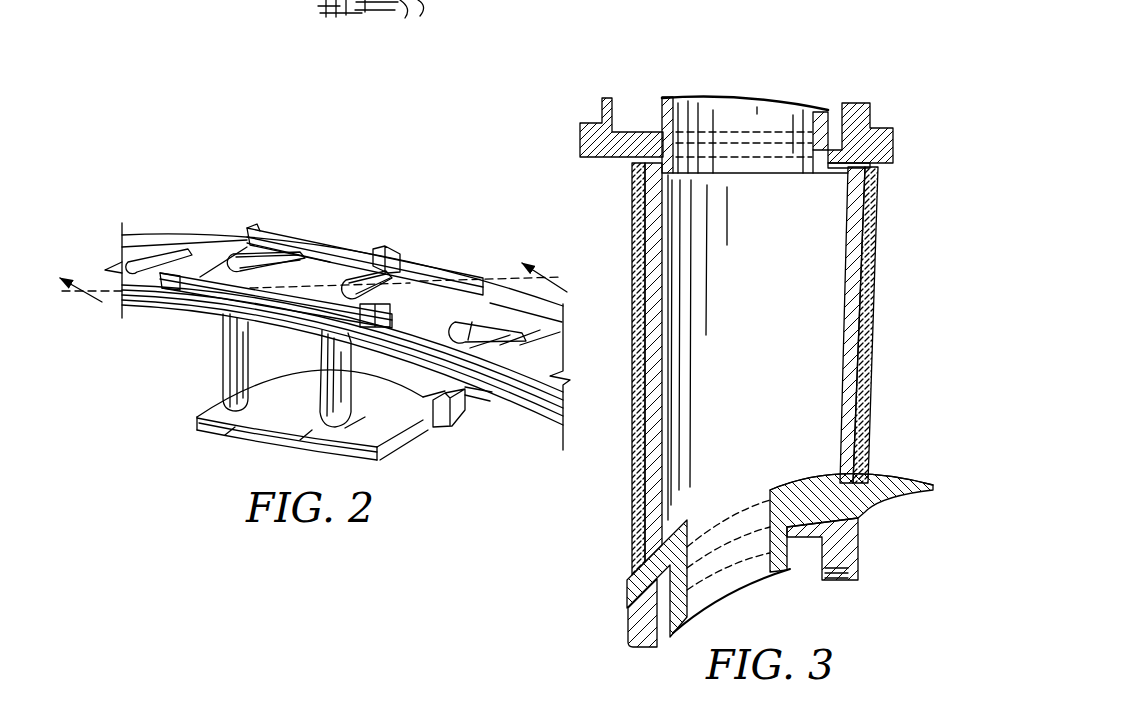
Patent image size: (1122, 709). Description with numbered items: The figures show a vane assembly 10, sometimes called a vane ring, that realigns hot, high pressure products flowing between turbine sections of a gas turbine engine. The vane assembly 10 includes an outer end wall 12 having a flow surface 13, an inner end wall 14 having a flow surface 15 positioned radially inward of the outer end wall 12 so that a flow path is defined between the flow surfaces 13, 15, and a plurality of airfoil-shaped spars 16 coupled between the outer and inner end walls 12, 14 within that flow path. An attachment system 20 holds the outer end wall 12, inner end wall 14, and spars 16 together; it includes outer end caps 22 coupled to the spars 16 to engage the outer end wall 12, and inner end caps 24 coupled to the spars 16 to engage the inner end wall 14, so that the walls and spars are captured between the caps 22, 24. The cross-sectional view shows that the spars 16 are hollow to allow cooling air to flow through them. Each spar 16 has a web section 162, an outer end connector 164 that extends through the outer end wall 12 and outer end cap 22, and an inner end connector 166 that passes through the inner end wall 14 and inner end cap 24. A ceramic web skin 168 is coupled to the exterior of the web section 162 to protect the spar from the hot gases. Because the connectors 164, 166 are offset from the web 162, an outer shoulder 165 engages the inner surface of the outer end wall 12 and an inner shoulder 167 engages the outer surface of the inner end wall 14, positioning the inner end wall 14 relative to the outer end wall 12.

In FIG. 2, the vane assembly 10 is at (123, 112).
In FIG. 3, the vane assembly 10 is at (881, 62).
In FIG. 2, the outer end wall 12 is at (207, 238).
In FIG. 3, the outer end wall 12 is at (575, 140).
In FIG. 3, the flow surface 13 is at (879, 166).
In FIG. 2, the inner end wall 14 is at (252, 426).
In FIG. 3, the inner end wall 14 is at (639, 599).
In FIG. 3, the flow surface 15 is at (875, 481).
In FIG. 2, the spars 16 is at (220, 361).
In FIG. 3, the spars 16 is at (760, 90).
In FIG. 2, the attachment system 20 is at (515, 463).
In FIG. 3, the attachment system 20 is at (936, 118).
In FIG. 2, the outer end caps 22 is at (415, 306).
In FIG. 3, the outer end caps 22 is at (859, 116).
In FIG. 2, the inner end caps 24 is at (422, 443).
In FIG. 3, the inner end caps 24 is at (813, 524).
In FIG. 3, the web section 162 is at (855, 292).
In FIG. 3, the outer end connector 164 is at (769, 121).
In FIG. 3, the outer shoulder 165 is at (830, 179).
In FIG. 3, the inner end connector 166 is at (769, 571).
In FIG. 3, the inner shoulder 167 is at (802, 476).
In FIG. 3, the ceramic web skin 168 is at (865, 400).